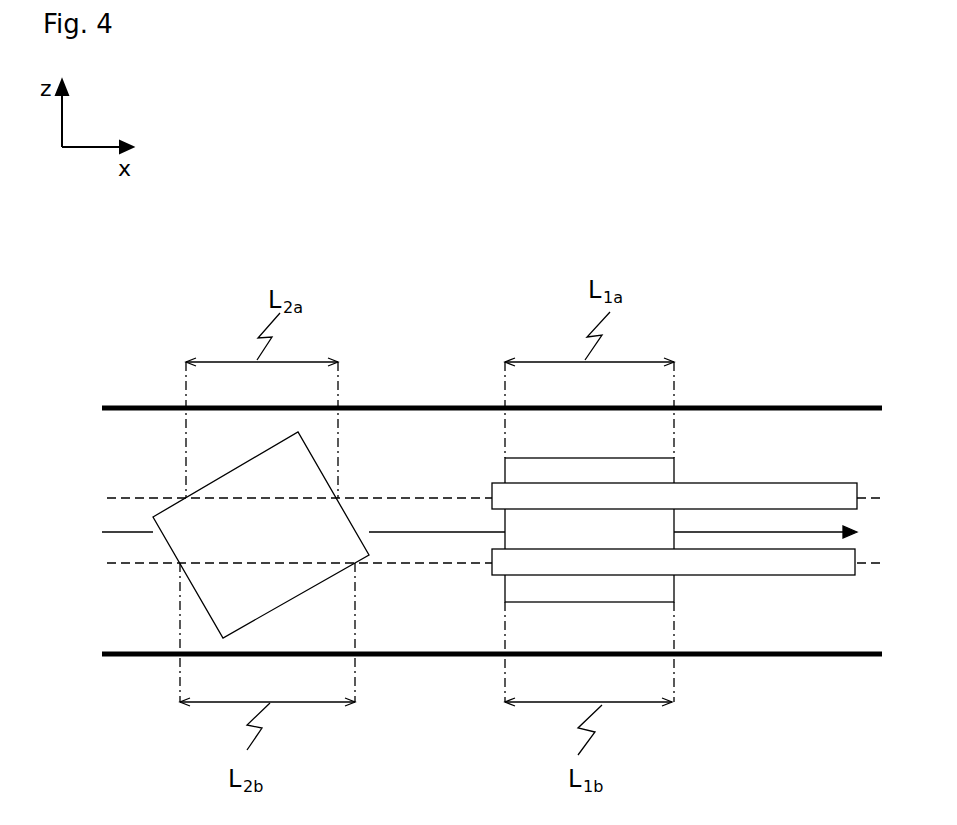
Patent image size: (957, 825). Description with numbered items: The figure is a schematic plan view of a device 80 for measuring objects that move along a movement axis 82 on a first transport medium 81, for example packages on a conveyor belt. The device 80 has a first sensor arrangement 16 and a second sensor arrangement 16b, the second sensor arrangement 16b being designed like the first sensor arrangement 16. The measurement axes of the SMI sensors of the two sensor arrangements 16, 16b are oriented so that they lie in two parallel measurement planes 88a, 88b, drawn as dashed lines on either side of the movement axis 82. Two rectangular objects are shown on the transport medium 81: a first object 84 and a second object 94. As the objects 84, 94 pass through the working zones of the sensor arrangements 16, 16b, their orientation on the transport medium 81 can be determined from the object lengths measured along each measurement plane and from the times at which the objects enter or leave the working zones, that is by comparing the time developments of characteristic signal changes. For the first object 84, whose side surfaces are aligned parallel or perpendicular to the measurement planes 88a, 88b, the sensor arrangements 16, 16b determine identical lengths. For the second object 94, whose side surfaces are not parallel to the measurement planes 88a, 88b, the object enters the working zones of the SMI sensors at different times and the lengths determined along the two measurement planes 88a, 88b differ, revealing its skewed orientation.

The device 80 is at (467, 464).
The first transport medium 81 is at (492, 343).
The movement axis 82 is at (487, 620).
The first object 84 is at (540, 590).
The measurement plane 88a is at (466, 463).
The measurement plane 88b is at (470, 605).
The second object 94 is at (238, 581).
The first sensor arrangement 16 is at (674, 419).
The second sensor arrangement 16b is at (673, 642).